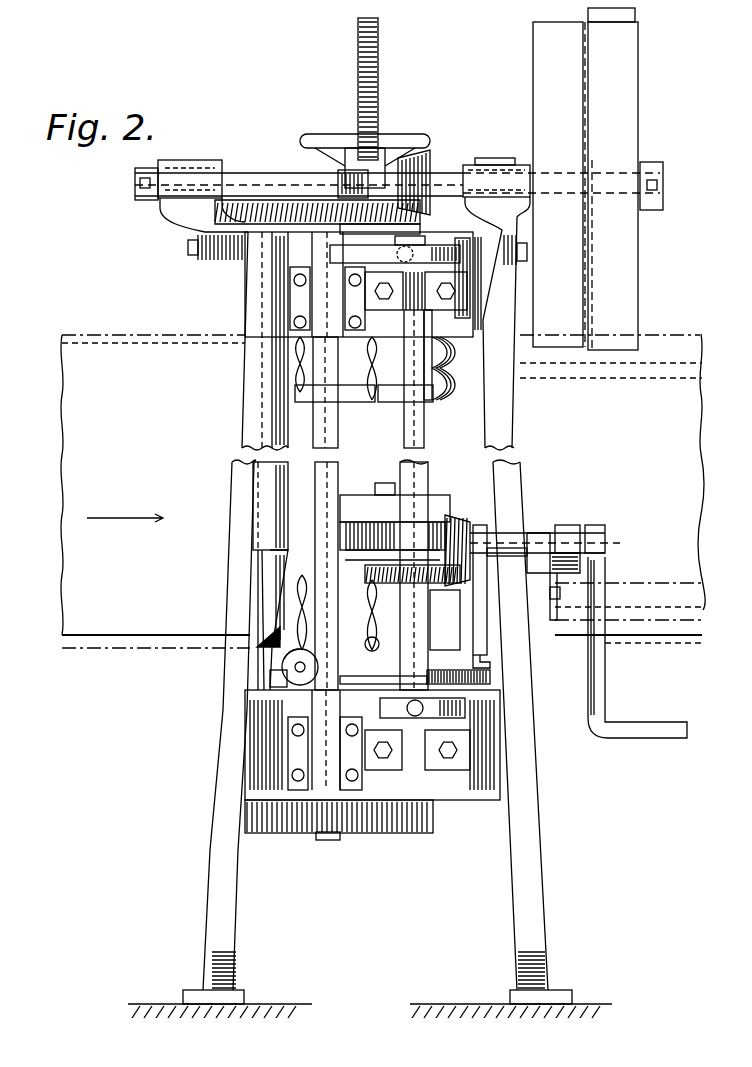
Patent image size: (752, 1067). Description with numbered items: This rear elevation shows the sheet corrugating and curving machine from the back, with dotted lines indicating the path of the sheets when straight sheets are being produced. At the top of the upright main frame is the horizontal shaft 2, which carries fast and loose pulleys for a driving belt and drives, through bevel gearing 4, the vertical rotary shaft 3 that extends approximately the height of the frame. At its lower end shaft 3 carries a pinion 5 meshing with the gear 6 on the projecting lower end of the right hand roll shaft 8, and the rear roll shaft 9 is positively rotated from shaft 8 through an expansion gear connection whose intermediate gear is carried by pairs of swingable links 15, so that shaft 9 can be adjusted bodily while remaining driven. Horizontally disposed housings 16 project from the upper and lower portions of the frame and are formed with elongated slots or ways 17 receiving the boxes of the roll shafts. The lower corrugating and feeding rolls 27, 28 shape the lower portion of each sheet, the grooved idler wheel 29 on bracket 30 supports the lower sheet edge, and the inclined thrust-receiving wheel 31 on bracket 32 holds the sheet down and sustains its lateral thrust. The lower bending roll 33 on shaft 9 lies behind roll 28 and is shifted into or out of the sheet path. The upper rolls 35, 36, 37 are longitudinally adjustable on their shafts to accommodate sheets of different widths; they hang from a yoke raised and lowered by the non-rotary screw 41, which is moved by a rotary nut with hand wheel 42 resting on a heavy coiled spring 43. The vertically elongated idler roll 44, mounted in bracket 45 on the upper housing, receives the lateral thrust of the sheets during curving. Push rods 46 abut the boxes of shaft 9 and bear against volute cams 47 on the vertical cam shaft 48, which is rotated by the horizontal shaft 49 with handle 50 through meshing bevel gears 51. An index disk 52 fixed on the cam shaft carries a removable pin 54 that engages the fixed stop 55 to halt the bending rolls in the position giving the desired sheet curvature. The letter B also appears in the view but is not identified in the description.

The horizontal shaft 2 is at (240, 178).
The vertical rotary shaft 3 is at (338, 432).
The bevel gearing 4 is at (420, 212).
The pinion 5 is at (318, 834).
The gear 6 is at (433, 826).
The roll shaft 8 is at (378, 515).
The roll shaft 9 is at (428, 478).
The swingable links 15 is at (386, 483).
The housings 16 is at (498, 725).
The slots or ways 17 is at (546, 914).
The corrugating and feeding roll 27 is at (298, 592).
The corrugating and feeding roll 28 is at (359, 615).
The guide wheel 29 is at (283, 656).
The bracket 30 is at (272, 680).
The thrust-receiving guide wheel 31 is at (282, 634).
The bracket 32 is at (260, 606).
The sheet bending roll 33 is at (455, 642).
The upper roll 35 is at (295, 350).
The upper roll 36 is at (305, 372).
The upper sheet bending roll 37 is at (445, 378).
The vertical screw 41 is at (378, 118).
The hand wheel 42 is at (430, 142).
The coiled spring 43 is at (352, 190).
The idler roll 44 is at (275, 482).
The bracket 45 is at (258, 288).
The push rods 46 is at (392, 250).
The volute cams 47 is at (467, 705).
The cam shaft 48 is at (415, 433).
The horizontal shaft 49 is at (538, 535).
The handle 50 is at (604, 692).
The bevel gears 51 is at (463, 518).
The index disk 52 is at (492, 677).
The pin 54 is at (470, 668).
The fixed stop 55 is at (478, 668).
The carriage B is at (292, 702).